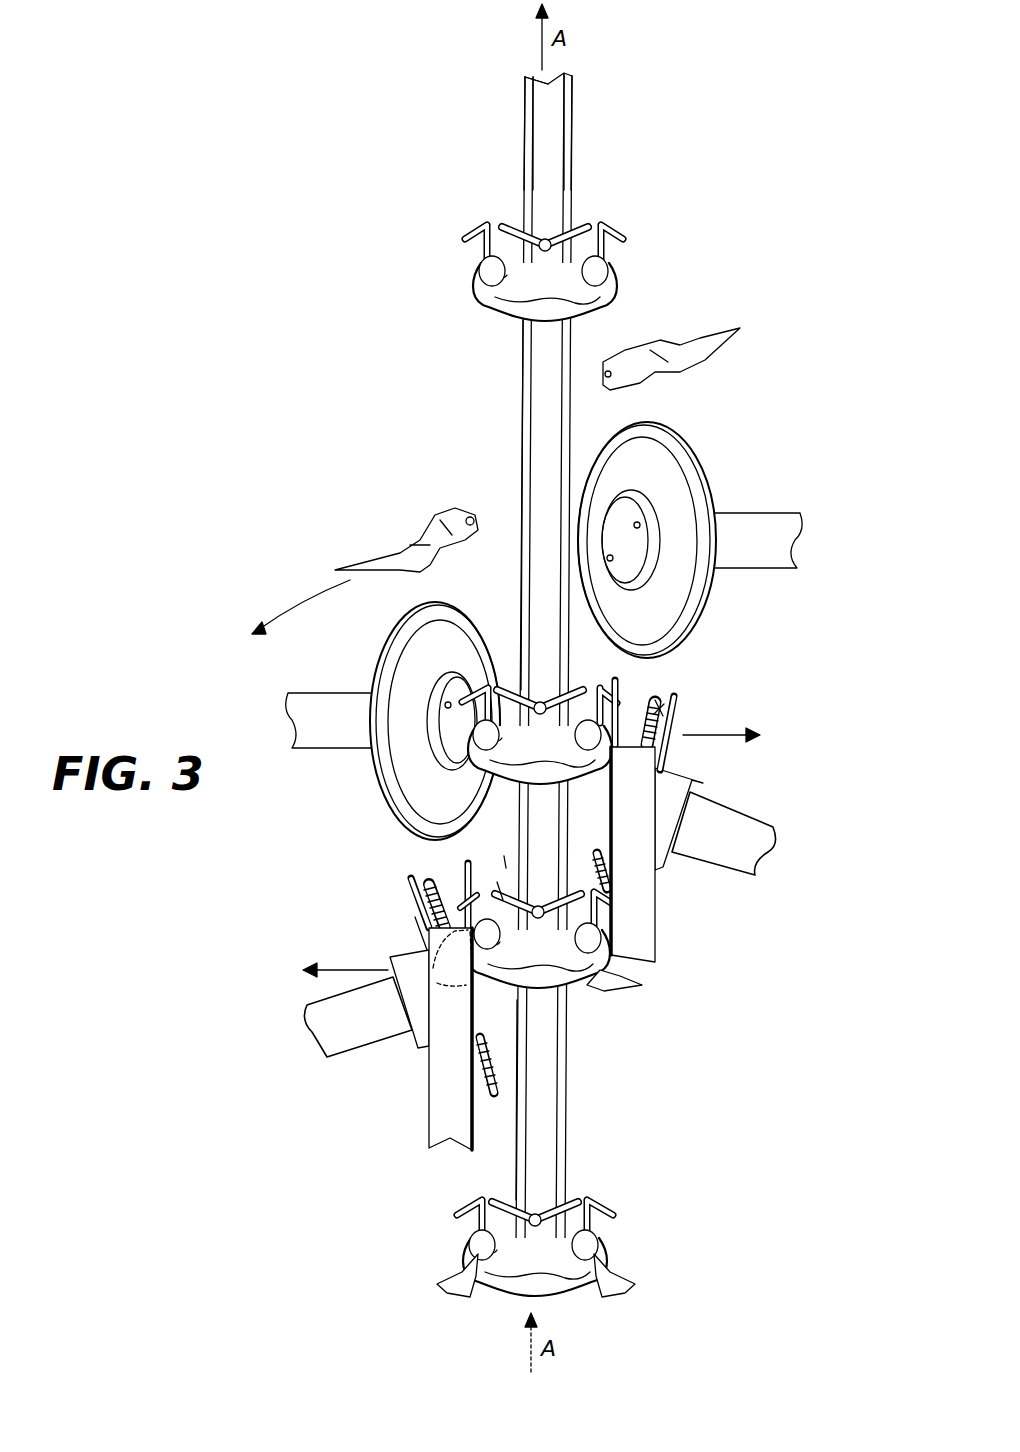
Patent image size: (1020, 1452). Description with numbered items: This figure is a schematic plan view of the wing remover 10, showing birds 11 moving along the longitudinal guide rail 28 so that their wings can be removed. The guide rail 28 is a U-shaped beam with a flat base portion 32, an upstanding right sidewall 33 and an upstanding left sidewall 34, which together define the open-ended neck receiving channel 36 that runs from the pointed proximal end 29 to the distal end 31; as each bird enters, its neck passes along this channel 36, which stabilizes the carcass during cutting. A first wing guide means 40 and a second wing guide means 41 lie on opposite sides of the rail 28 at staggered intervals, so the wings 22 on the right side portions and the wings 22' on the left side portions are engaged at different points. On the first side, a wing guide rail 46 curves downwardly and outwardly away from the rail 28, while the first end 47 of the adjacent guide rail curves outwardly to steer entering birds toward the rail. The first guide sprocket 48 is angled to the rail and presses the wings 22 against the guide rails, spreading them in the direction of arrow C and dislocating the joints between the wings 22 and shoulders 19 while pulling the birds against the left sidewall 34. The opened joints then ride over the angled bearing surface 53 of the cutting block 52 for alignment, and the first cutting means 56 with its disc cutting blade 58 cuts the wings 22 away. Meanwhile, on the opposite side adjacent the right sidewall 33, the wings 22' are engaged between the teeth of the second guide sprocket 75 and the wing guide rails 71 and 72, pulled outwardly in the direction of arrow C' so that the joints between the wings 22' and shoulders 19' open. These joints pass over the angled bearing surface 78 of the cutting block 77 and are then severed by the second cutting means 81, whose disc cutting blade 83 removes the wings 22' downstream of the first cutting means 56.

The wing remover 10 is at (358, 448).
The birds 11 is at (543, 274).
The shoulders 19 is at (441, 1302).
The shoulders 19' is at (625, 1056).
The wings 22 is at (367, 899).
The wings 22' is at (551, 806).
The longitudinal guide rail 28 is at (514, 428).
The proximal end 29 is at (547, 1160).
The distal end 31 is at (525, 128).
The base portion 32 is at (553, 150).
The right sidewall 33 is at (572, 161).
The left sidewall 34 is at (525, 190).
The neck receiving channel 36 is at (548, 380).
The first wing guide means 40 is at (407, 932).
The second wing guide means 41 is at (703, 758).
The wing guide rail 46 is at (464, 878).
The first end 47 is at (412, 890).
The first guide sprocket 48 is at (432, 882).
The cutting block 52 is at (497, 882).
The angled bearing surface 53 is at (504, 856).
The first cutting means 56 is at (373, 686).
The disc cutting blade 58 is at (462, 660).
The wing guide rail 71 is at (620, 682).
The wing guide rail 72 is at (662, 712).
The second guide sprocket 75 is at (662, 720).
The cutting block 77 is at (592, 707).
The angled bearing surface 78 is at (581, 700).
The second cutting means 81 is at (721, 485).
The disc cutting blade 83 is at (650, 482).